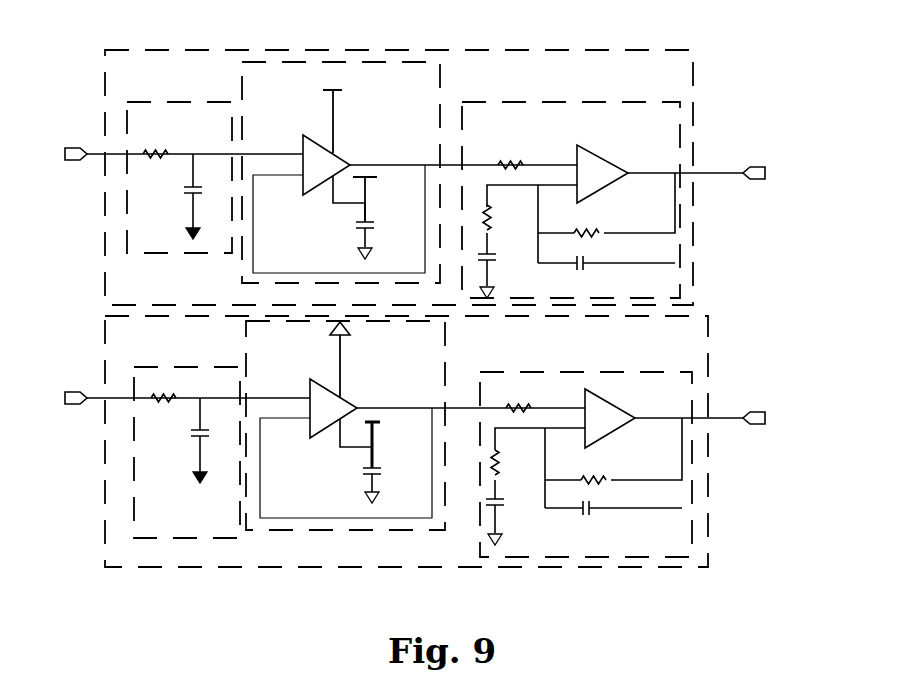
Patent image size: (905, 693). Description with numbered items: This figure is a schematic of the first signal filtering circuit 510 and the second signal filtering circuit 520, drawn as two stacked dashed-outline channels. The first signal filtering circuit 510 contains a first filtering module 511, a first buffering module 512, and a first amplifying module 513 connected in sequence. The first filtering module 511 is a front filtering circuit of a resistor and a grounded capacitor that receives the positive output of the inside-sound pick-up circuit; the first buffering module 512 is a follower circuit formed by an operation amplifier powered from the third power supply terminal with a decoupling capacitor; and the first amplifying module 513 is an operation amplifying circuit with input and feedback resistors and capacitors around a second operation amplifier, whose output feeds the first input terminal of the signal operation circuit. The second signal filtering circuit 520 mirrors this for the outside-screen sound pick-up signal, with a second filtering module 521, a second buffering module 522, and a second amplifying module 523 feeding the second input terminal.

The first signal filtering circuit 510 is at (693, 102).
The first filtering module 511 is at (135, 102).
The first buffering module 512 is at (340, 62).
The first amplifying module 513 is at (527, 102).
The second signal filtering circuit 520 is at (708, 337).
The second filtering module 521 is at (157, 367).
The second buffering module 522 is at (337, 530).
The second amplifying module 523 is at (563, 372).